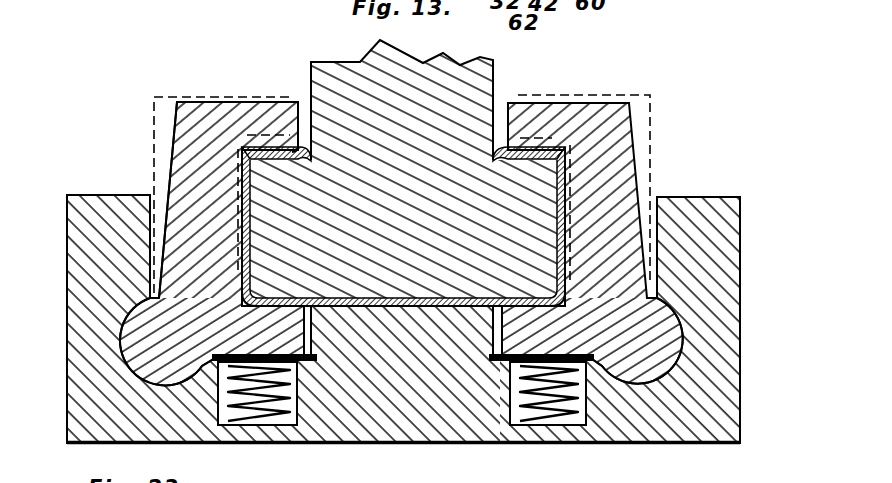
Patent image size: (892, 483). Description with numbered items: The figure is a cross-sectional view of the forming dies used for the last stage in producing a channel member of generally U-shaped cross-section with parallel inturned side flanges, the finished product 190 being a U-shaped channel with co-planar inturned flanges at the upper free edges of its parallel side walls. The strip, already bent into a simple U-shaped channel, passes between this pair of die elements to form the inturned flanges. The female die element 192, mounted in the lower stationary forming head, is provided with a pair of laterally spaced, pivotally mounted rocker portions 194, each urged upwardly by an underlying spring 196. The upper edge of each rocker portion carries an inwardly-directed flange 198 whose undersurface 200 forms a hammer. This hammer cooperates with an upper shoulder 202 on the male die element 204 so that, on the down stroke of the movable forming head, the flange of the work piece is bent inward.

The product 190 is at (238, 162).
The female die element 192 is at (720, 368).
The rocker portion 194 is at (176, 157).
The spring 196 is at (270, 424).
The inwardly-directed flange 198 is at (295, 102).
The undersurface 200 is at (250, 138).
The upper shoulder 202 is at (252, 158).
The male die element 204 is at (415, 337).